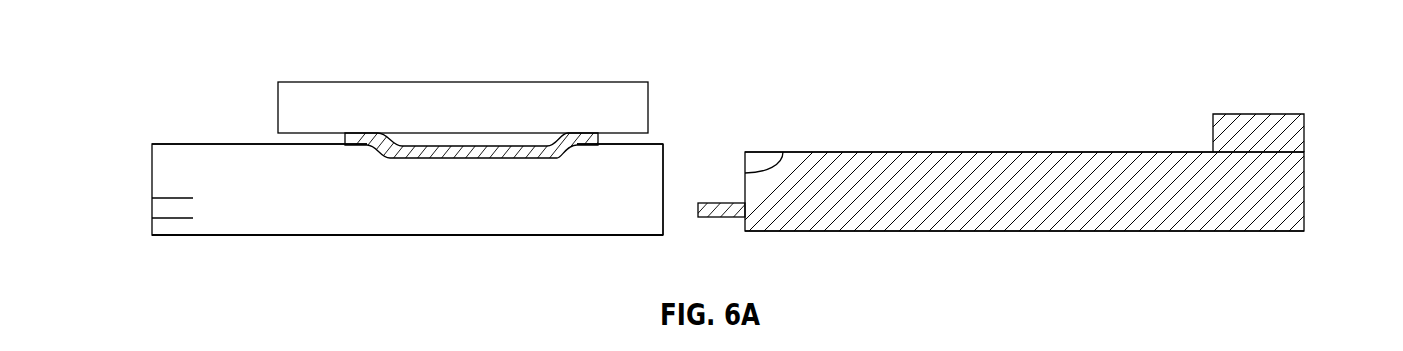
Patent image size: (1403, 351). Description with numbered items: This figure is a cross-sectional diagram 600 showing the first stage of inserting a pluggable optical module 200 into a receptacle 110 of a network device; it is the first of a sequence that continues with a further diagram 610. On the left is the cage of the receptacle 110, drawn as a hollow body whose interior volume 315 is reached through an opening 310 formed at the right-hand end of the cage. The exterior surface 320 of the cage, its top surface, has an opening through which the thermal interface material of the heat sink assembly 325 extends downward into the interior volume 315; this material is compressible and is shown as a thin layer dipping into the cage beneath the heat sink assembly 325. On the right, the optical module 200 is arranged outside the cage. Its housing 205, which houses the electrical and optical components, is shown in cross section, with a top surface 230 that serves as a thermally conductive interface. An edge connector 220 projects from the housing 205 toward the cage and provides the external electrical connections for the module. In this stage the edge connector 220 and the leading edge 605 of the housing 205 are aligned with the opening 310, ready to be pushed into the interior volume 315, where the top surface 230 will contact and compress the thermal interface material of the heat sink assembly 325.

The receptacle 110 is at (391, 208).
The opening 310 is at (664, 157).
The interior volume 315 is at (572, 217).
The exterior surface 320 is at (235, 144).
The heat sink assembly 325 is at (648, 103).
The optical module 200 is at (1066, 174).
The housing 205 is at (1082, 220).
The edge connector 220 is at (722, 217).
The top surface 230 is at (907, 152).
The diagram 600 is at (1305, 90).
The leading edge 605 is at (783, 152).
The diagram 610 is at (1183, 347).